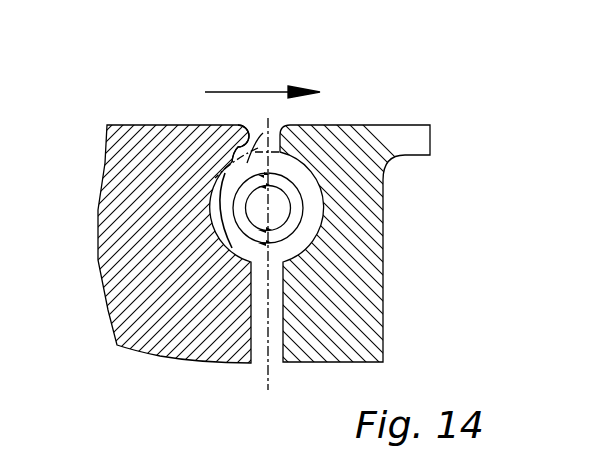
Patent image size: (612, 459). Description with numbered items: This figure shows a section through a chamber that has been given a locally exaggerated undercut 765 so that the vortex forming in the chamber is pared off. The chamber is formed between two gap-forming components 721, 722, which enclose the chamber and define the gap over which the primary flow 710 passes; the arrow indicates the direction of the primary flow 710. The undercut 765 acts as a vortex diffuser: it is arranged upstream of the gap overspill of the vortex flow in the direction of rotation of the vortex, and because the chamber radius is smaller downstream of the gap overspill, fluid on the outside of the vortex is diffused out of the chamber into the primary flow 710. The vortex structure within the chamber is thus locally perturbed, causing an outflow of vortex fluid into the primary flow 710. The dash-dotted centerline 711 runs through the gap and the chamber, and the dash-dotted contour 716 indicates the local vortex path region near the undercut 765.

The first housing member 721 is at (143, 148).
The second housing member 722 is at (372, 145).
The locally exaggerated undercut 765 is at (237, 150).
The seal deflection path 716 is at (263, 133).
The primary flow 710 is at (253, 92).
The centerline 711 is at (262, 372).